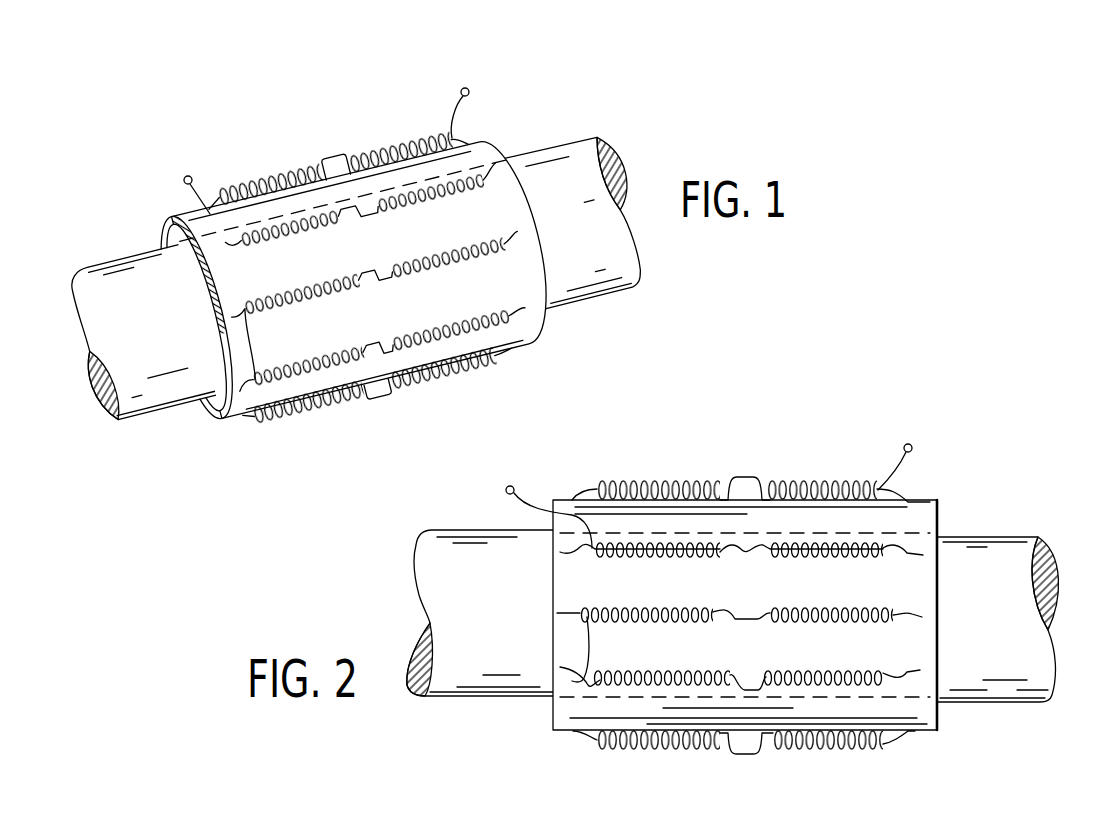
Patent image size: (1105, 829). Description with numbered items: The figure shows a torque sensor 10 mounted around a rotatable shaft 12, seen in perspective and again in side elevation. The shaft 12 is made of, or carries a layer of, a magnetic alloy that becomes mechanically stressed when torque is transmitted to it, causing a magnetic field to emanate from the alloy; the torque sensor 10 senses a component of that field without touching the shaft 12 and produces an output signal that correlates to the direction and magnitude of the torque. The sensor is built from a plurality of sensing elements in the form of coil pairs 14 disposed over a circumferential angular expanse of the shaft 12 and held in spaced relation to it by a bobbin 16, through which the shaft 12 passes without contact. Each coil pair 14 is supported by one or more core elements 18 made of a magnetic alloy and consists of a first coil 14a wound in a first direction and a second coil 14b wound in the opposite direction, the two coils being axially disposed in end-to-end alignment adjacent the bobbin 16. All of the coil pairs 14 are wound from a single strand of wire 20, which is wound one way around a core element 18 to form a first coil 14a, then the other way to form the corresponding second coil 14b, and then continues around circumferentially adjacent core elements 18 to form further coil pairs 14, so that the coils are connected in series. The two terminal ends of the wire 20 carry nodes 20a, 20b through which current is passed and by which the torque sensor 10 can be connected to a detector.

In FIG. 1, the torque sensor 10 is at (90, 94).
In FIG. 2, the torque sensor 10 is at (412, 481).
In FIG. 1, the rotatable shaft 12 is at (573, 142).
In FIG. 2, the rotatable shaft 12 is at (997, 548).
In FIG. 1, the coil pairs 14 is at (398, 172).
In FIG. 2, the coil pairs 14 is at (789, 515).
In FIG. 1, the first coil 14a is at (254, 158).
In FIG. 2, the first coil 14a is at (683, 463).
In FIG. 1, the second coil 14b is at (370, 132).
In FIG. 2, the second coil 14b is at (778, 466).
In FIG. 1, the bobbin 16 is at (527, 287).
In FIG. 2, the bobbin 16 is at (923, 690).
In FIG. 1, the core elements 18 is at (208, 212).
In FIG. 2, the core elements 18 is at (593, 552).
In FIG. 1, the single strand of wire 20 is at (512, 230).
In FIG. 2, the single strand of wire 20 is at (893, 617).
In FIG. 1, the node 20a is at (185, 177).
In FIG. 2, the node 20a is at (512, 486).
In FIG. 1, the node 20b is at (469, 90).
In FIG. 2, the node 20b is at (912, 445).